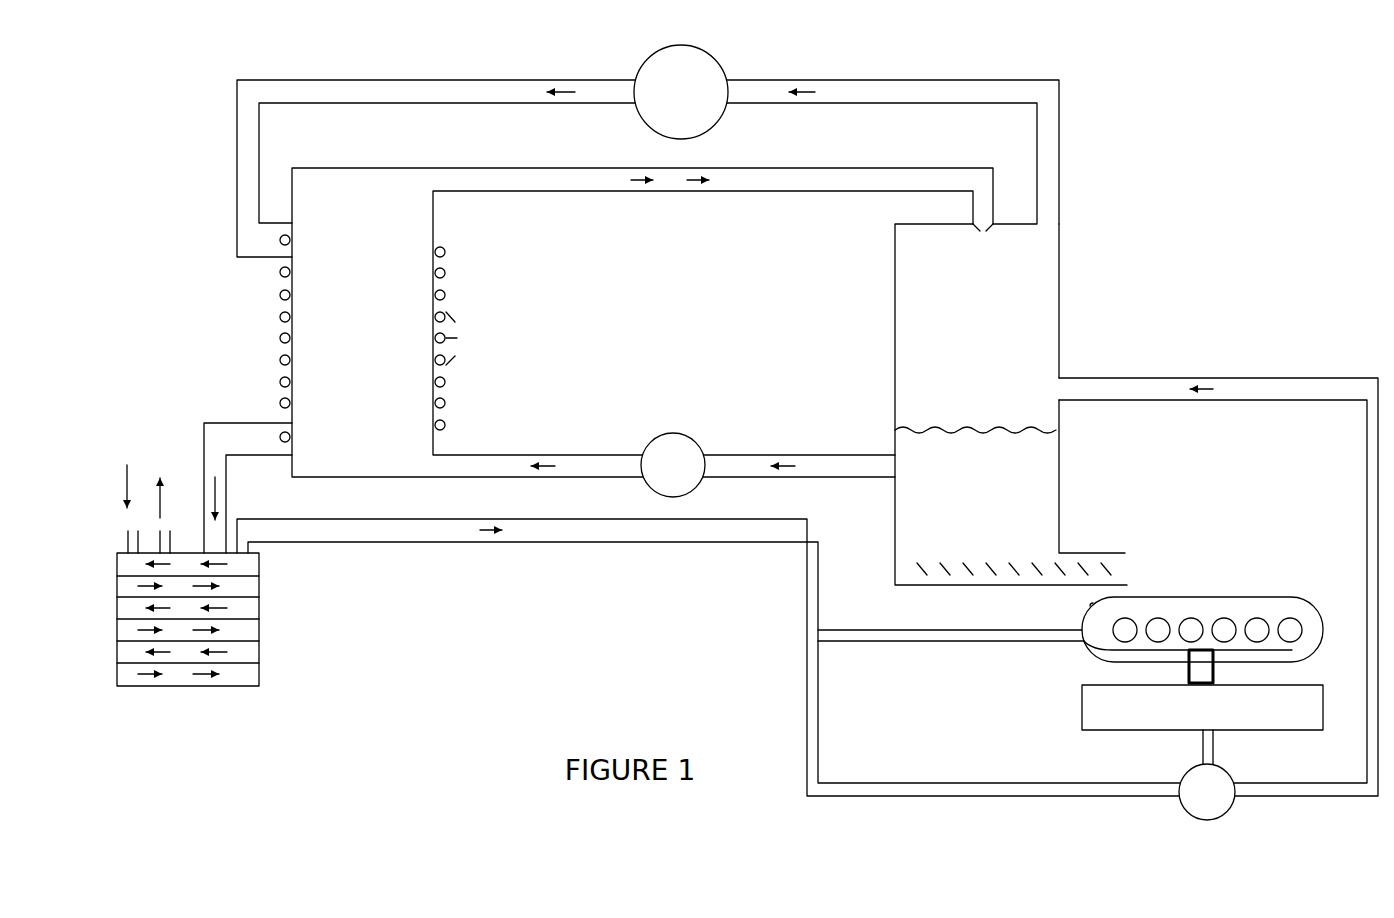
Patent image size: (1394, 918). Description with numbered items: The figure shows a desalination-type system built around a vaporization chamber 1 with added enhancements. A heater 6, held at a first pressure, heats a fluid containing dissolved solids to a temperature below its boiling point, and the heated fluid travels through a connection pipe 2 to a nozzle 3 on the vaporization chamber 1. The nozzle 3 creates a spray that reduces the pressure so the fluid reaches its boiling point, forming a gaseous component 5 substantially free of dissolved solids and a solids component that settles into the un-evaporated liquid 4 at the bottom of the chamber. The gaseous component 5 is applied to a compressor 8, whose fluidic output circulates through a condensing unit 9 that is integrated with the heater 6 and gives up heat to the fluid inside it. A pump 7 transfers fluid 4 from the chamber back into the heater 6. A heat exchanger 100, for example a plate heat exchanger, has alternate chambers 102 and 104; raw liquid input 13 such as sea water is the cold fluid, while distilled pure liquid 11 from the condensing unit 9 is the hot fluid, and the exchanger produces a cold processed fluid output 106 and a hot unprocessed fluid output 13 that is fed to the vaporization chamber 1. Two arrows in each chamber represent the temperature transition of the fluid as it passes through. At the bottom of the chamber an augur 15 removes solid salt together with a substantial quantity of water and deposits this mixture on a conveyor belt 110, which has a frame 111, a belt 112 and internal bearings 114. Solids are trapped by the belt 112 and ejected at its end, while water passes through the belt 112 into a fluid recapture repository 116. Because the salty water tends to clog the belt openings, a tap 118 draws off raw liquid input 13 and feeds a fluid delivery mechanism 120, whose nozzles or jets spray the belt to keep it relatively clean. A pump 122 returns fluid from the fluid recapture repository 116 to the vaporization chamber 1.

The vaporization chamber 1 is at (1060, 268).
The connection pipe 2 is at (922, 170).
The nozzle 3 is at (980, 233).
The un-evaporated liquid 4 is at (1060, 465).
The gaseous component 5 is at (808, 90).
The heater 6 is at (434, 223).
The pump 7 is at (675, 432).
The compressor 8 is at (722, 62).
The condensing unit 9 is at (460, 338).
The distilled pure liquid 11 is at (227, 477).
The raw liquid input 13 is at (122, 487).
The augur 15 is at (997, 575).
The heat exchanger 100 is at (240, 704).
The alternate chamber 102 is at (259, 650).
The alternate chamber 104 is at (259, 585).
The cold processed fluid output 106 is at (163, 490).
The conveyor belt 110 is at (1259, 586).
The frame 111 is at (1180, 678).
The belt 112 is at (1213, 596).
The internal bearings 114 is at (1126, 642).
The fluid recapture repository 116 is at (1078, 690).
The tap 118 is at (940, 643).
The fluid delivery mechanism 120 is at (1235, 652).
The pump 122 is at (1210, 818).